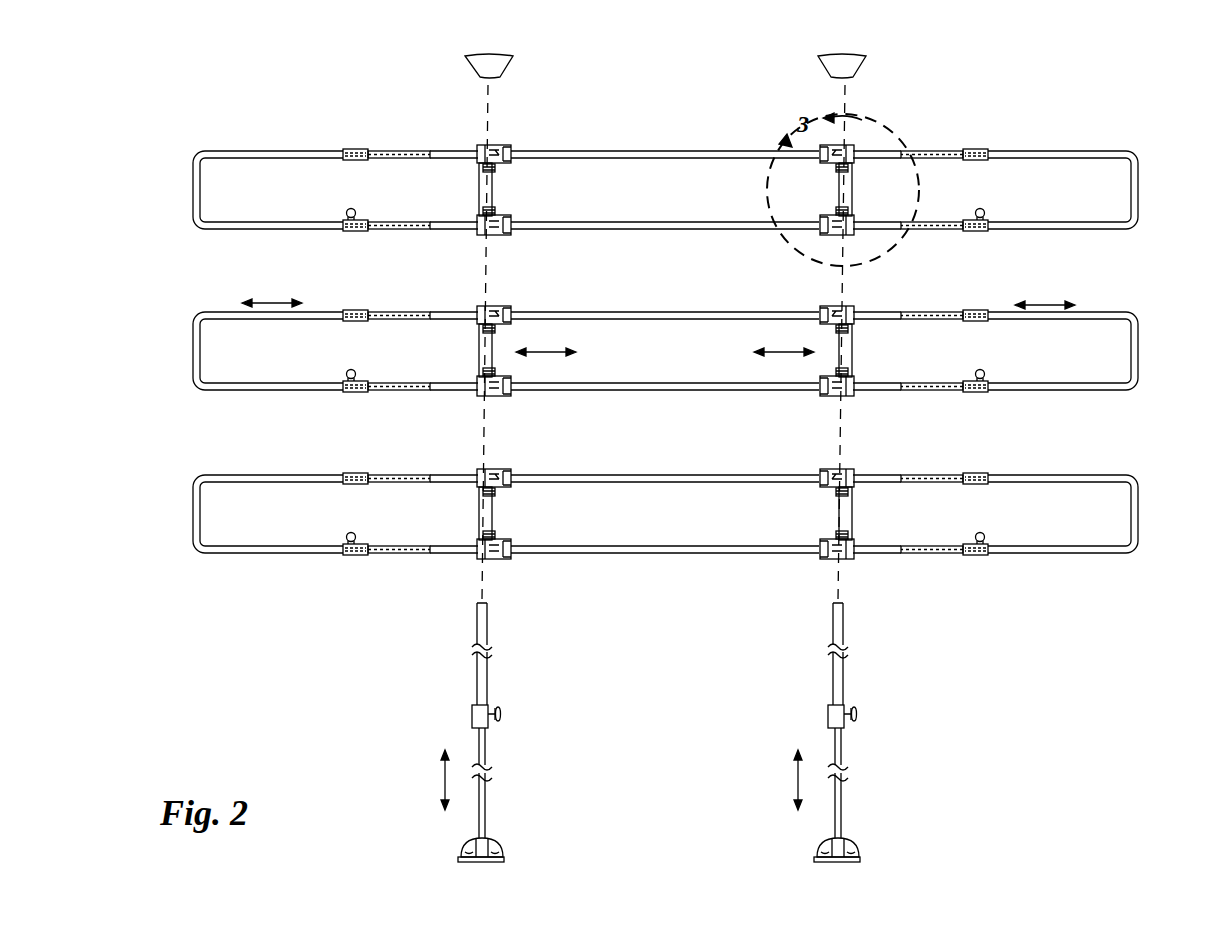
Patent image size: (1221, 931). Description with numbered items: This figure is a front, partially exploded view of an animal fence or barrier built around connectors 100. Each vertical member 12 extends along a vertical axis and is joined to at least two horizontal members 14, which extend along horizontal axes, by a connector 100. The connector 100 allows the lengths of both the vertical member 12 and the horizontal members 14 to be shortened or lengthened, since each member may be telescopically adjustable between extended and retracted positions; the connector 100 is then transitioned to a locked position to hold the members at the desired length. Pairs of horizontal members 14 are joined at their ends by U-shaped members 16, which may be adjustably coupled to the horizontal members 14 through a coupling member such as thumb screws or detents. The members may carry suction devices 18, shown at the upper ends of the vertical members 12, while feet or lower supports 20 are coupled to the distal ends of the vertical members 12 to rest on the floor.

The vertical member 12 is at (477, 677).
The horizontal members 14 is at (640, 151).
The U-shaped members 16 is at (190, 186).
The suction devices 18 is at (468, 64).
The feet or lower supports 20 is at (462, 845).
The connector 100 is at (448, 187).